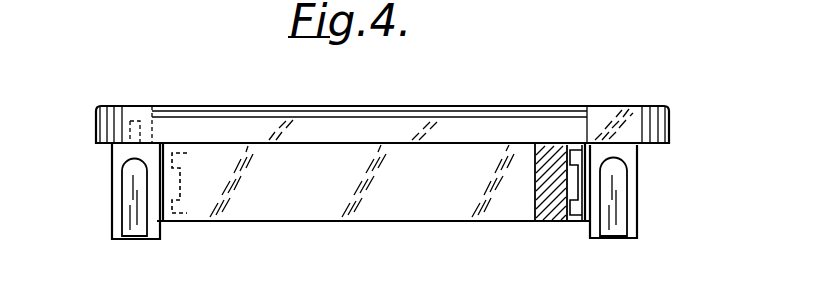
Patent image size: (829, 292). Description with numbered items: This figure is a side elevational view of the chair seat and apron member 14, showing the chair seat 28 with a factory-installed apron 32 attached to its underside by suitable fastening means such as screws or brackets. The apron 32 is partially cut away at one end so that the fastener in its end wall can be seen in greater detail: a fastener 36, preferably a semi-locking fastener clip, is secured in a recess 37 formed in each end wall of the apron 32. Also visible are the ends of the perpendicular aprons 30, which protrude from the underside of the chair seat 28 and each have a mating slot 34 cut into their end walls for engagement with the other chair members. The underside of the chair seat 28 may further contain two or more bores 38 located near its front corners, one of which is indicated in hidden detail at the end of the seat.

The chair seat and apron member 14 is at (706, 71).
The chair seat 28 is at (185, 105).
The apron 30 is at (115, 199).
The apron 32 is at (326, 198).
The mating slot 34 is at (132, 215).
The fastener 36 is at (172, 222).
The recess 37 is at (574, 218).
The bore 38 is at (125, 146).